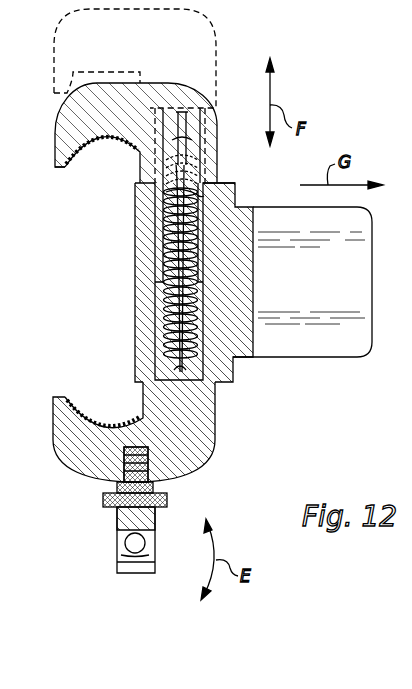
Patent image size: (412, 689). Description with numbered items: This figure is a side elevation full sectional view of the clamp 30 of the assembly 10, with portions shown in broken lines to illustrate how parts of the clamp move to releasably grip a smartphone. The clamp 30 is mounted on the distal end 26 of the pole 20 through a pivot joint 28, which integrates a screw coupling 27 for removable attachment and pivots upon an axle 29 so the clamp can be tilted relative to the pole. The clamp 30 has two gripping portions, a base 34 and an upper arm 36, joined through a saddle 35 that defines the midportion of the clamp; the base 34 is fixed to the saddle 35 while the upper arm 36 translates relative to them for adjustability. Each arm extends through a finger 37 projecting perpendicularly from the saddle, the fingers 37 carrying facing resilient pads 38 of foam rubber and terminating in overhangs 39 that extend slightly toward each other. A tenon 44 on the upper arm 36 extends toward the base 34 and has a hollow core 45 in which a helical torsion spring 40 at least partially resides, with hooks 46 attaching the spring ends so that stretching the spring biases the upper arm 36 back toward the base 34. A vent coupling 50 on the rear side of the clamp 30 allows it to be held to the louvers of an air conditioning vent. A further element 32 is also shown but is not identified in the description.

The assembly 10 is at (193, 610).
The pole 20 is at (135, 557).
The distal end 26 is at (157, 574).
The screw coupling 27 is at (170, 478).
The pivot joint 28 is at (152, 540).
The axle 29 is at (133, 540).
The clamp 30 is at (230, 78).
The screw 32 is at (150, 455).
The base 34 is at (153, 416).
The saddle 35 is at (135, 318).
The upper arm 36 is at (141, 204).
The fingers 37 is at (109, 90).
The resilient pads 38 is at (112, 147).
The overhangs 39 is at (57, 168).
The spring 40 is at (165, 305).
The tenon 44 is at (160, 228).
The hollow core 45 is at (205, 196).
The hooks 46 is at (222, 185).
The vent coupling 50 is at (355, 345).